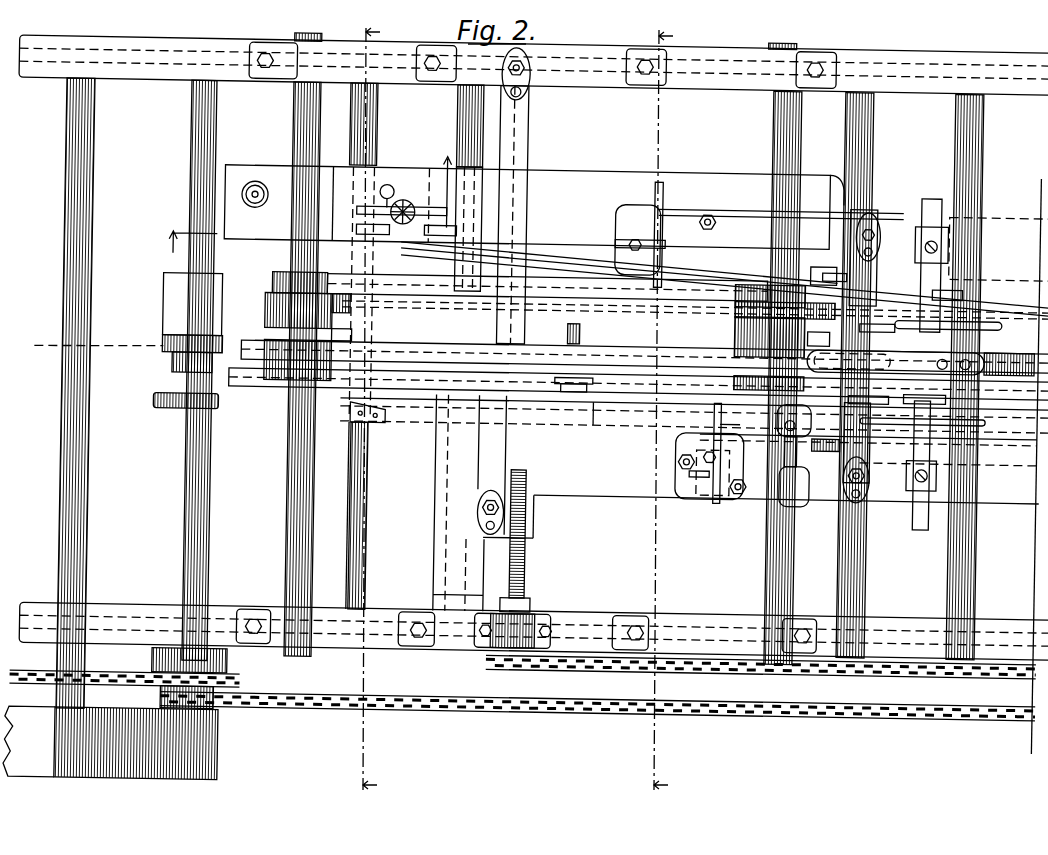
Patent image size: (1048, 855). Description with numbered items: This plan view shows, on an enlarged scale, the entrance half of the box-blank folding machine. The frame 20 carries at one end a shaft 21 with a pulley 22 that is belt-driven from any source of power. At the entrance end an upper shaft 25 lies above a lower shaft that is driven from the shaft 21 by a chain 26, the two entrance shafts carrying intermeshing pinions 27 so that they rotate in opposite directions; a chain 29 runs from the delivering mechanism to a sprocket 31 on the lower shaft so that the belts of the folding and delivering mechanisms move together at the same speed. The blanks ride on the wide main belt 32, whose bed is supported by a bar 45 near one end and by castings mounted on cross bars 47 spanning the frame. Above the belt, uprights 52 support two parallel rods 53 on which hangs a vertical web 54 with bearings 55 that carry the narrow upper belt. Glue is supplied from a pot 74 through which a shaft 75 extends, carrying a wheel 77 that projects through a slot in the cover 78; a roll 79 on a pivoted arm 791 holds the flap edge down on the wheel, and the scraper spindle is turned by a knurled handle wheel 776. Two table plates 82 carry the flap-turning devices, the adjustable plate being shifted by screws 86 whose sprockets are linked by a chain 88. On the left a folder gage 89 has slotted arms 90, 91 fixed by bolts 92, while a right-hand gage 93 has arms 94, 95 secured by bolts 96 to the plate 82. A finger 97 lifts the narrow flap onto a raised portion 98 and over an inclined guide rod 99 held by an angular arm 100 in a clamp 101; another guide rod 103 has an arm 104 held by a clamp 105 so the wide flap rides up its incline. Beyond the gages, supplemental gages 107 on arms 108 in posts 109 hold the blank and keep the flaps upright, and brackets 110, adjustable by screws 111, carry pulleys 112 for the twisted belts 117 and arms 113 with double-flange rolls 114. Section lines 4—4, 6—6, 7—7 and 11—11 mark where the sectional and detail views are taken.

The frame 20 is at (144, 77).
The shaft 21 is at (76, 511).
The pulley 22 is at (205, 739).
The upper shaft 25 is at (206, 505).
The chain 26 is at (120, 689).
The pinions 27 is at (237, 663).
The chain 29 is at (520, 714).
The sprocket 31 is at (163, 703).
The wide belt 32 is at (246, 284).
The bar 45 is at (453, 121).
The cross bars 47 is at (978, 564).
The uprights 52 is at (381, 620).
The rods 53 is at (362, 538).
The web 54 is at (439, 374).
The bearings 55 is at (262, 326).
The glue pot 74 is at (534, 207).
The shaft 75 is at (363, 491).
The glue wheel 77 is at (353, 228).
The cover 78 is at (408, 216).
The roll 79 is at (427, 254).
The table plates 82 is at (765, 378).
The screws 86 is at (527, 555).
The chain 88 is at (836, 665).
The folder gage plate 89 is at (930, 286).
The arm 90 is at (520, 134).
The arm 91 is at (876, 233).
The bolts 92 is at (519, 86).
The folder gage 93 is at (880, 409).
The arm 94 is at (492, 453).
The arm 95 is at (875, 443).
The bolts 96 is at (875, 484).
The finger 97 is at (168, 415).
The raised portion 98 is at (395, 432).
The guide rod 99 is at (593, 410).
The angular arm 100 is at (720, 421).
The clamp 101 is at (696, 472).
The guide rod 103 is at (597, 288).
The arm 104 is at (656, 202).
The clamp 105 is at (652, 266).
The supplemental gages 107 is at (887, 397).
The arms 108 is at (938, 255).
The posts 109 is at (946, 233).
The brackets 110 is at (662, 282).
The adjusting screws 111 is at (706, 212).
The pulley 112 is at (806, 262).
The arm 113 is at (858, 320).
The double-flange roll 114 is at (827, 262).
The belts 117 is at (1017, 311).
The knurled handle wheel 776 is at (251, 186).
The arm 791 is at (376, 192).
The section line 4— 4 is at (89, 345).
The section line 6— 6 is at (367, 411).
The section line 7— 7 is at (658, 409).
The section line 11— 11 is at (303, 204).